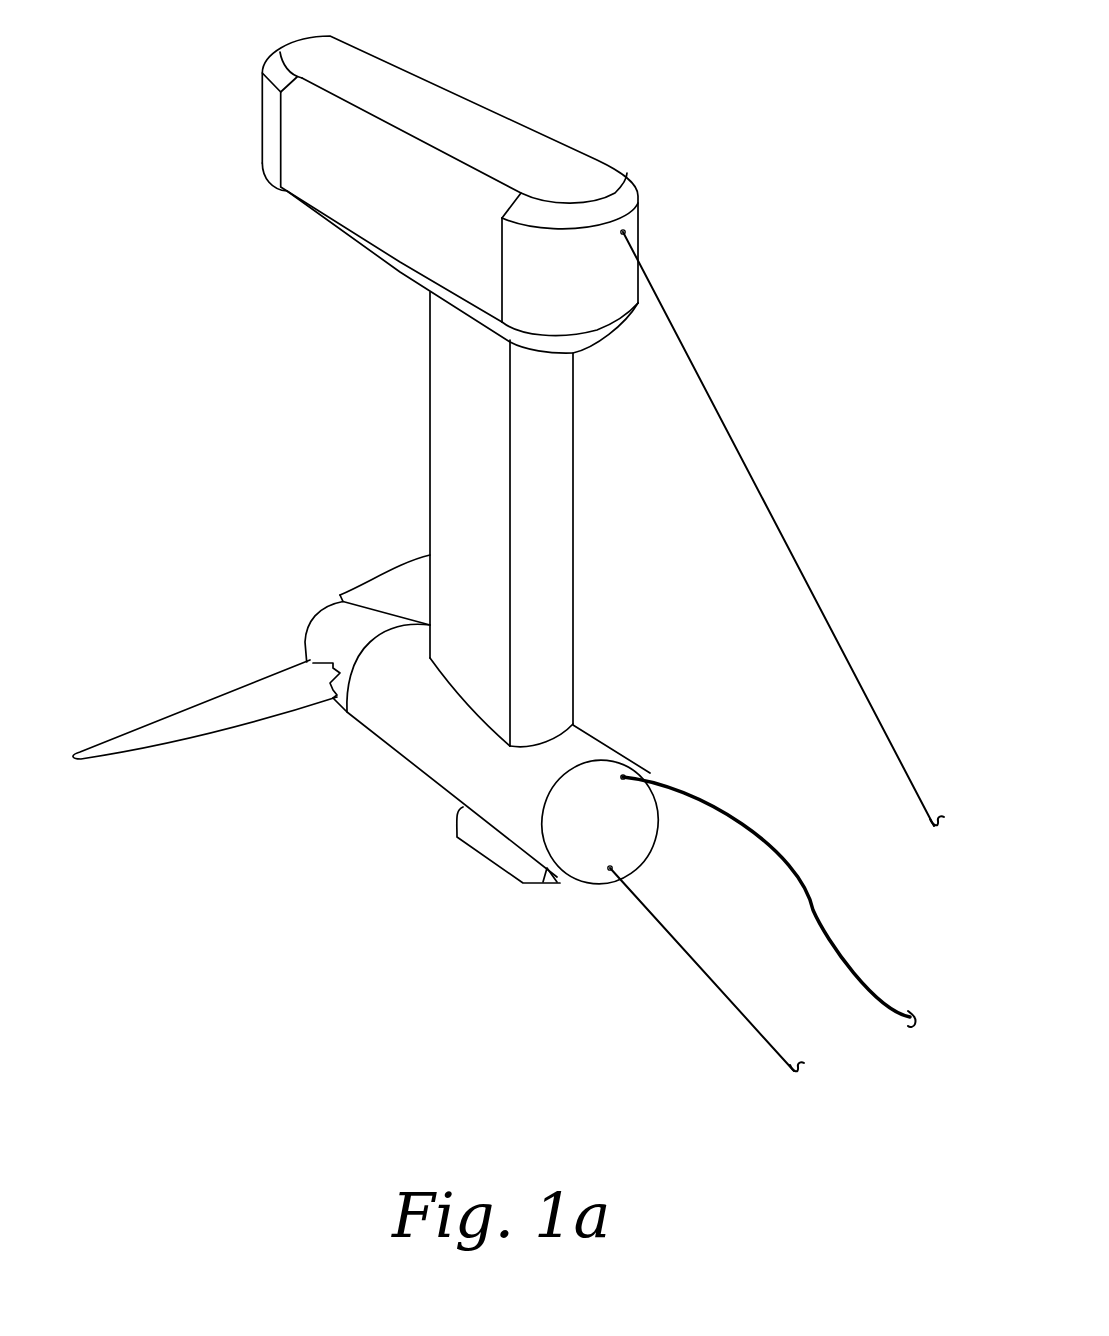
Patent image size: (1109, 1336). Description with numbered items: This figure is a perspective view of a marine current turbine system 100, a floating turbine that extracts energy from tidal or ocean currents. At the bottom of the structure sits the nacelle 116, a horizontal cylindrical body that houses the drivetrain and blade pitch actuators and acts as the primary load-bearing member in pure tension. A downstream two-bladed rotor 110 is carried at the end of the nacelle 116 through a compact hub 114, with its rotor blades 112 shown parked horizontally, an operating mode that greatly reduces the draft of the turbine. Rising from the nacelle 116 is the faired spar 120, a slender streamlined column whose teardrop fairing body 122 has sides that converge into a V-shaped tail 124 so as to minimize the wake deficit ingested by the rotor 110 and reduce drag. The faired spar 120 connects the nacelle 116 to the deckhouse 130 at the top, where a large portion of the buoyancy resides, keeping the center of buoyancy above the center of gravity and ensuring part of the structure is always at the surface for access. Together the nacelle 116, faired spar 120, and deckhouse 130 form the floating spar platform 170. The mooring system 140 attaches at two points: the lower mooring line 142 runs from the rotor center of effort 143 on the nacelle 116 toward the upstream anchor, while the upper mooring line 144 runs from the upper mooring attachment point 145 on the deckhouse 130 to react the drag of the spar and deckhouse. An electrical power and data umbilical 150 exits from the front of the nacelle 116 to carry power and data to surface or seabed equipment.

The marine current turbine system 100 is at (186, 33).
The downstream two-bladed rotor 110 is at (231, 659).
The rotor blades 112 is at (191, 751).
The hub 114 is at (367, 608).
The nacelle 116 is at (495, 794).
The faired spar 120 is at (447, 506).
The teardrop fairing body 122 is at (555, 533).
The V-shaped tail 124 is at (450, 388).
The deckhouse 130 is at (375, 212).
The mooring system 140 is at (899, 685).
The lower mooring line 142 is at (700, 972).
The rotor center of effort 143 is at (607, 884).
The upper mooring line 144 is at (751, 475).
The upper mooring attachment point 145 is at (623, 232).
The electrical power and data umbilical 150 is at (826, 938).
The floating spar platform 170 is at (343, 308).